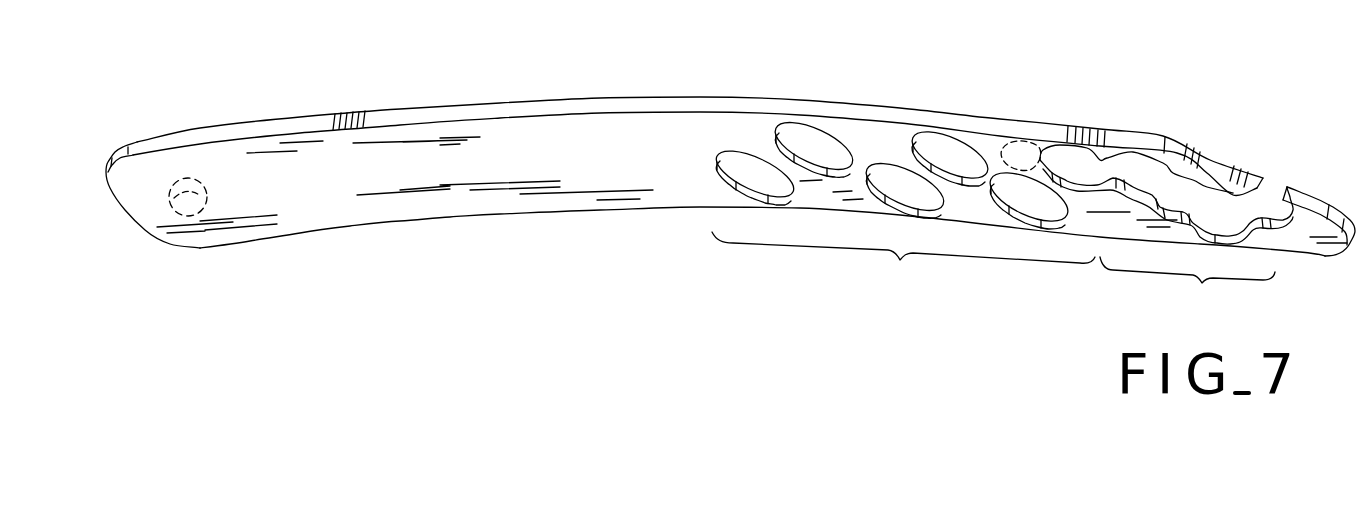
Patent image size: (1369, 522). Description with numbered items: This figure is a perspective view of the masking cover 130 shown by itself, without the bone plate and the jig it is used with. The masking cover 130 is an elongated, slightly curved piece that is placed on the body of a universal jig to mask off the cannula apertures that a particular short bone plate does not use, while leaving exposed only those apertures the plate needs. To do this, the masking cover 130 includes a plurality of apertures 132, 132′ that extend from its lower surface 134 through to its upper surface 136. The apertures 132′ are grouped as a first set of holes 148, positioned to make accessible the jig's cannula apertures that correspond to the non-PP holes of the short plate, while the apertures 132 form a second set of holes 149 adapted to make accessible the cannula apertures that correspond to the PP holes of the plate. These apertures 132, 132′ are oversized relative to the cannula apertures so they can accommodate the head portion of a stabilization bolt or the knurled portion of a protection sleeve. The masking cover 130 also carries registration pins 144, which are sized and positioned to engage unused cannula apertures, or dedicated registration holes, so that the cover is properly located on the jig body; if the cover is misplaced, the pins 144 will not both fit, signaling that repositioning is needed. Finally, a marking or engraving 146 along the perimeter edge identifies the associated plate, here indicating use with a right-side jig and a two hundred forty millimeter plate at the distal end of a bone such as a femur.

The masking cover 130 is at (447, 60).
The apertures 132 is at (1188, 188).
The apertures 132′ is at (933, 140).
The lower surface 134 is at (286, 116).
The upper surface 136 is at (538, 172).
The registration pins 144 is at (189, 212).
The marking or engraving 146 is at (563, 100).
The first set of holes 148 is at (903, 263).
The second set of holes 149 is at (1187, 286).